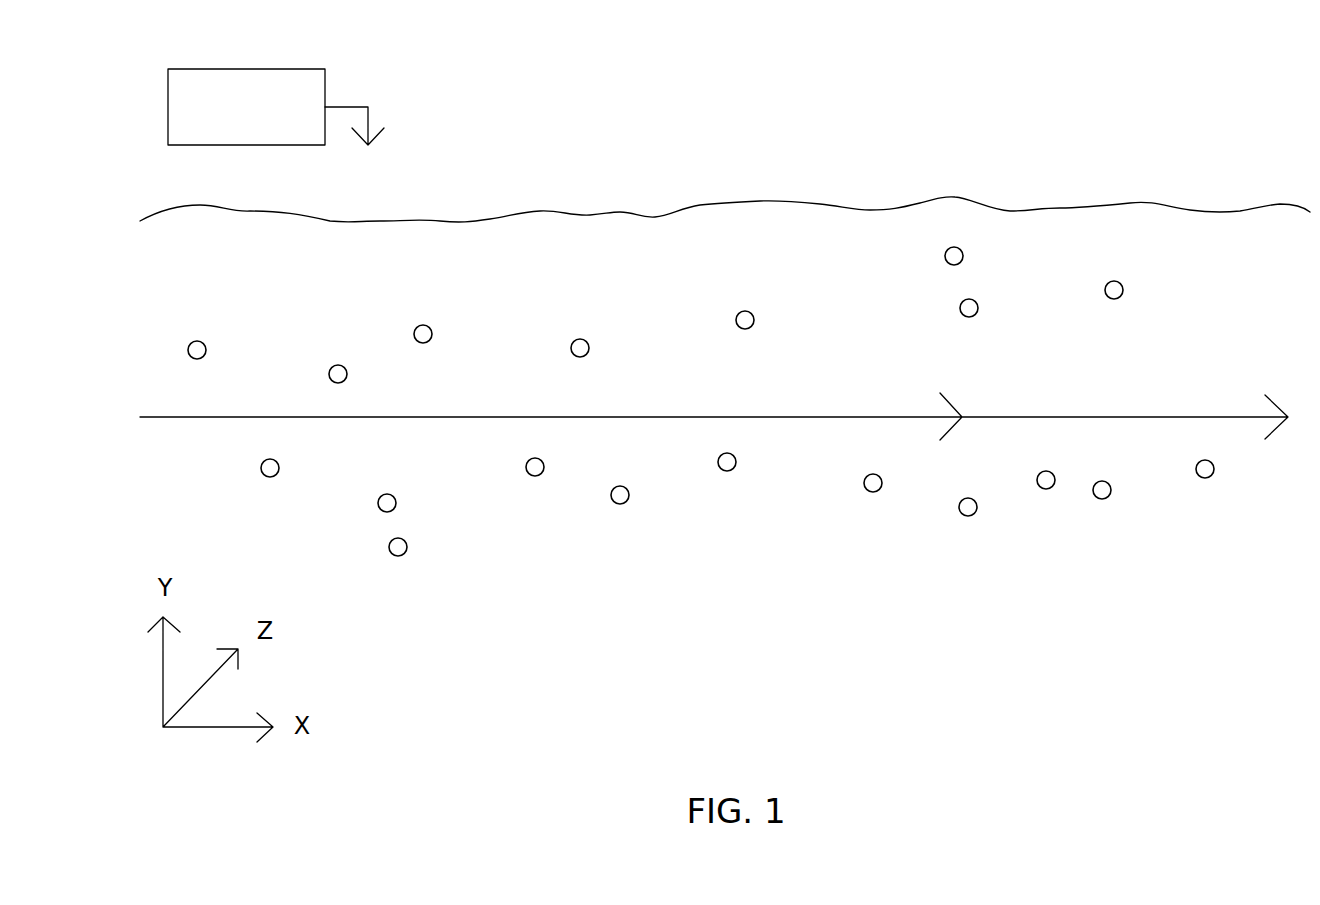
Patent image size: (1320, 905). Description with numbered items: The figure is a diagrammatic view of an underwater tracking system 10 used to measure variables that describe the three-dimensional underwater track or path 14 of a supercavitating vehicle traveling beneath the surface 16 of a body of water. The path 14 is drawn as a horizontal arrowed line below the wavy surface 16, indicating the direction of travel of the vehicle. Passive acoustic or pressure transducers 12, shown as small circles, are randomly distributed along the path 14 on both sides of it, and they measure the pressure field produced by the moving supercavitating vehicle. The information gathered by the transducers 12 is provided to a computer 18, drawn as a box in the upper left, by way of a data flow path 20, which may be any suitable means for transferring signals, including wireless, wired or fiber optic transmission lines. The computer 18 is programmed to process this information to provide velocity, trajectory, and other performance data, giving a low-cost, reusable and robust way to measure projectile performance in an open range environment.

The tracking system 10 is at (1157, 117).
The passive acoustic or pressure transducers 12 is at (618, 497).
The path 14 is at (1194, 417).
The surface 16 is at (821, 209).
The computer 18 is at (277, 78).
The data flow path 20 is at (362, 107).